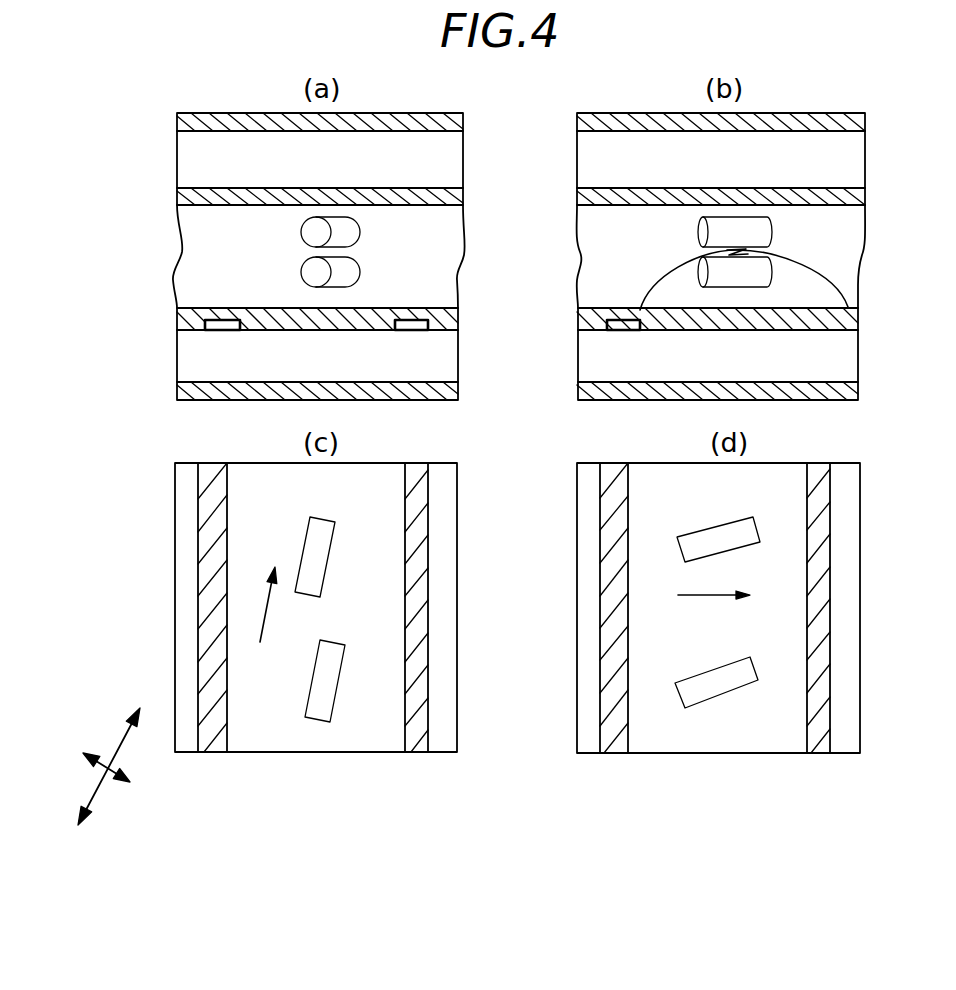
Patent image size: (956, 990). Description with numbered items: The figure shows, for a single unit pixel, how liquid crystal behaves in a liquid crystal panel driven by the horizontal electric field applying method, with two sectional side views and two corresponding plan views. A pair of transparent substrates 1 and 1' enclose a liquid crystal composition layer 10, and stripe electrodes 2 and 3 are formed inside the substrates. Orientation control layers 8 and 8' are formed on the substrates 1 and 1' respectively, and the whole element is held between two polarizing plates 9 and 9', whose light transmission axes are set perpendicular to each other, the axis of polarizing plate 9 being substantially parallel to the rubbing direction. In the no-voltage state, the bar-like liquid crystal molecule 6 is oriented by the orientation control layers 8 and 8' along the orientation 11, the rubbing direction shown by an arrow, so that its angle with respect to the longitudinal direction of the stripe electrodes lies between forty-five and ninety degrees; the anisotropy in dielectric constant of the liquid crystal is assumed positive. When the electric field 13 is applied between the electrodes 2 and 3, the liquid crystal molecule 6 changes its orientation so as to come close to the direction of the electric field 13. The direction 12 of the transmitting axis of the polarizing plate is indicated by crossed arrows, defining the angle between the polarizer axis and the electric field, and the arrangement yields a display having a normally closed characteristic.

The polarizing plate 9' is at (288, 127).
The transparent substrate 1' is at (288, 159).
The orientation control layer 8' is at (288, 202).
The liquid crystal composition layer 10 is at (265, 252).
The liquid crystal molecule 6 is at (348, 233).
The orientation control layer 8 is at (287, 322).
The stripe electrode 3 is at (225, 330).
The stripe electrode 2 is at (405, 330).
The transparent substrate 1 is at (287, 356).
The polarizing plate 9 is at (287, 390).
The electric field 13 is at (805, 273).
The orientation (rubbing direction) 11 is at (265, 622).
The direction of transmitting axis of polarizing plate 12 is at (98, 792).